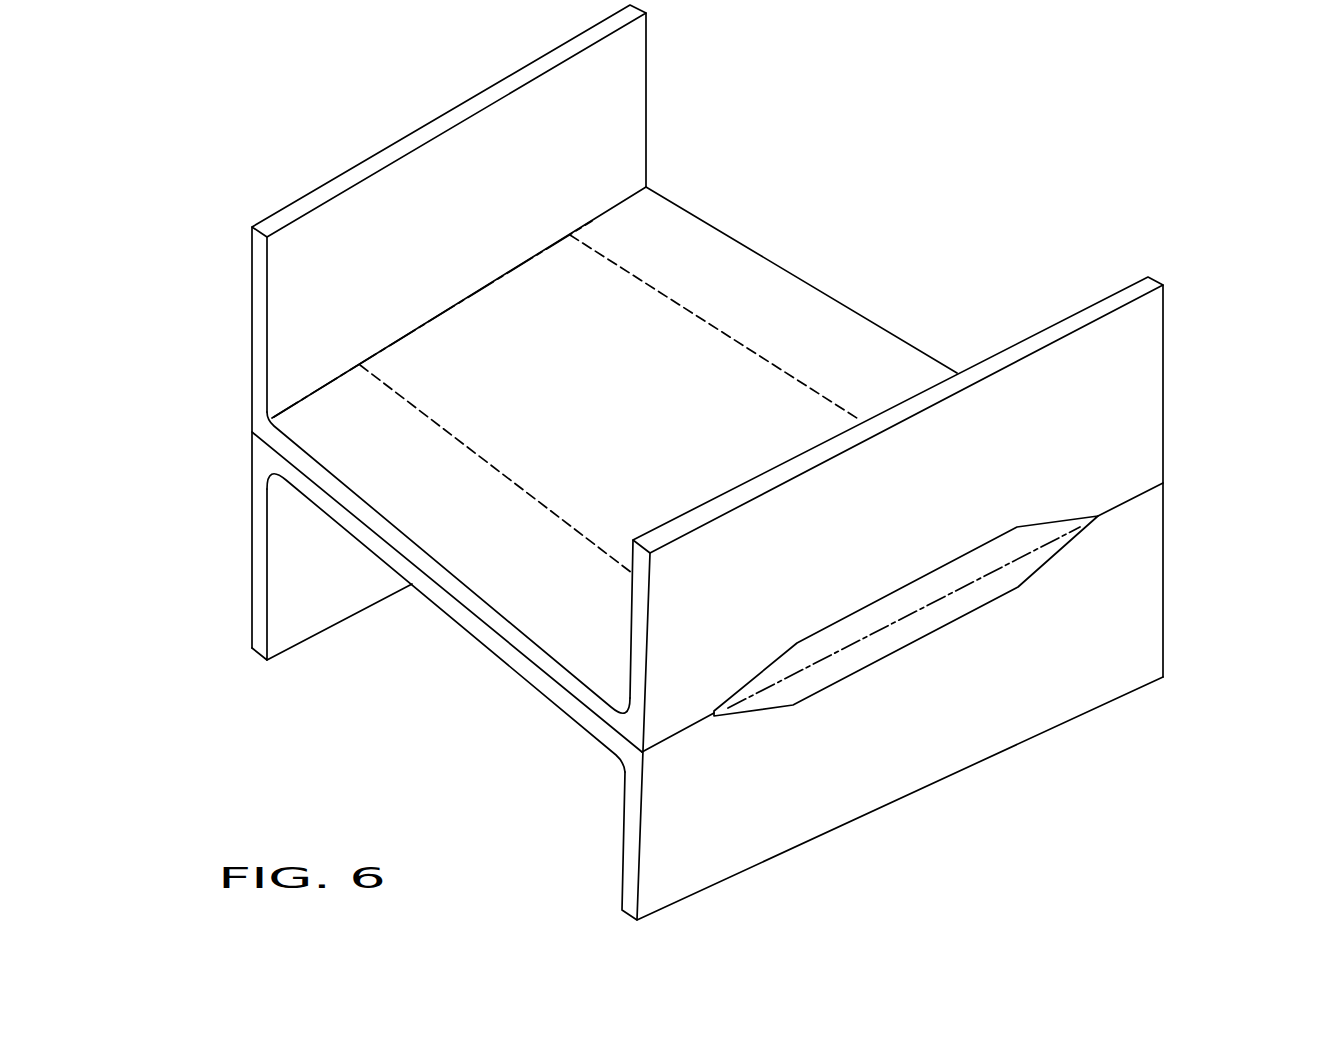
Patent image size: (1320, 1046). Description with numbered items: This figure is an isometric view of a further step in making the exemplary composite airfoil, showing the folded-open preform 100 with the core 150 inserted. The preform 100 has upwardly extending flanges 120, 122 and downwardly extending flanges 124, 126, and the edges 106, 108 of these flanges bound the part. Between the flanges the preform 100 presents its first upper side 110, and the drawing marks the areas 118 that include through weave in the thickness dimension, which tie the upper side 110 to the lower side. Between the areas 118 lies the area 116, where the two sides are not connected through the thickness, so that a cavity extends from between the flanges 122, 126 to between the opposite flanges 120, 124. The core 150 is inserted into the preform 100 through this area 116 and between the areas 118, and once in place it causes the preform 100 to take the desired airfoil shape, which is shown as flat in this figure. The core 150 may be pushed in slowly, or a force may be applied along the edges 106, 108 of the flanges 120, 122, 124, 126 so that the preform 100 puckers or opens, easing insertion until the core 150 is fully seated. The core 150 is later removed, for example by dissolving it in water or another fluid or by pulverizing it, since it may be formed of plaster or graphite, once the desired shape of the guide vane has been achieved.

The preform 100 is at (235, 109).
The third edge 106 is at (628, 826).
The fourth edge 108 is at (1165, 430).
The first upper side 110 is at (582, 391).
The area 116 is at (466, 421).
The areas 118 is at (723, 275).
The upwardly extending flange 120 is at (623, 88).
The upwardly extending flange 122 is at (1128, 352).
The downwardly extending flange 124 is at (305, 600).
The downwardly extending flange 126 is at (1127, 580).
The core 150 is at (900, 642).